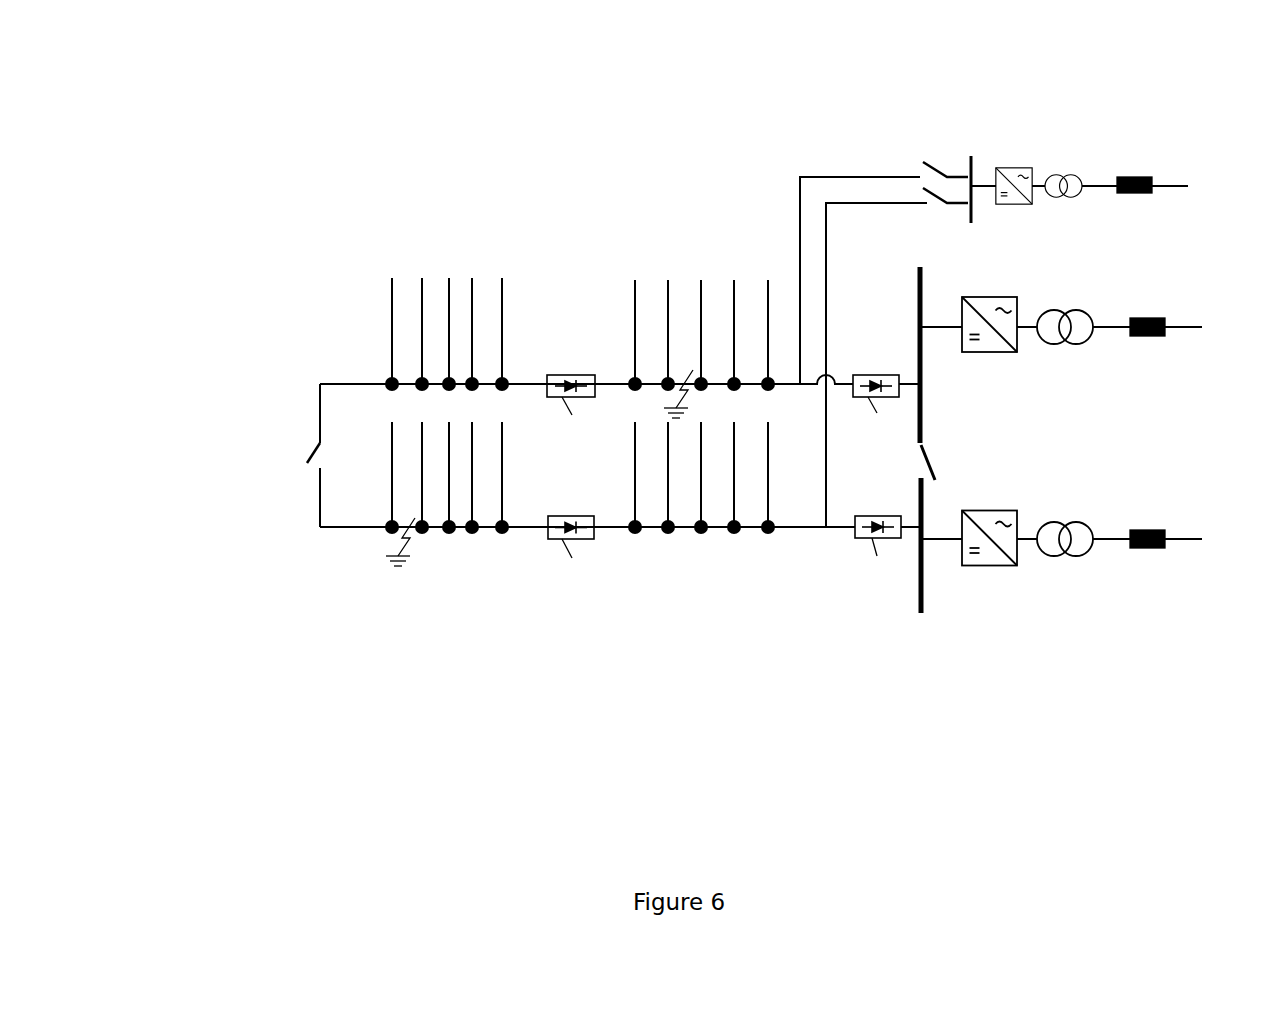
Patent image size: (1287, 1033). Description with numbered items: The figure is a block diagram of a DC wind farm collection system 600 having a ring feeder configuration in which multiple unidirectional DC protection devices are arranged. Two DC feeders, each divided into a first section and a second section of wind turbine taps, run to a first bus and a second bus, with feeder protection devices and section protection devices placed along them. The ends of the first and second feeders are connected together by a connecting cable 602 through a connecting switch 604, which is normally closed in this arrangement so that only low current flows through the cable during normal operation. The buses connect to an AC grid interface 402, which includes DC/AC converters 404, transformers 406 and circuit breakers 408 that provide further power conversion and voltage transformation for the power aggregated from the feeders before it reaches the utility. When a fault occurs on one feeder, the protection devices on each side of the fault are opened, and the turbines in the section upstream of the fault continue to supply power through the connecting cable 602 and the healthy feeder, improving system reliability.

The DC wind farm collection system 600 is at (241, 95).
The connecting cable 602 is at (323, 410).
The connecting switch 604 is at (323, 457).
The AC grid interface 402 is at (1050, 663).
The DC/AC converter 404 is at (855, 162).
The transformer 406 is at (1067, 210).
The circuit breaker 408 is at (1147, 196).